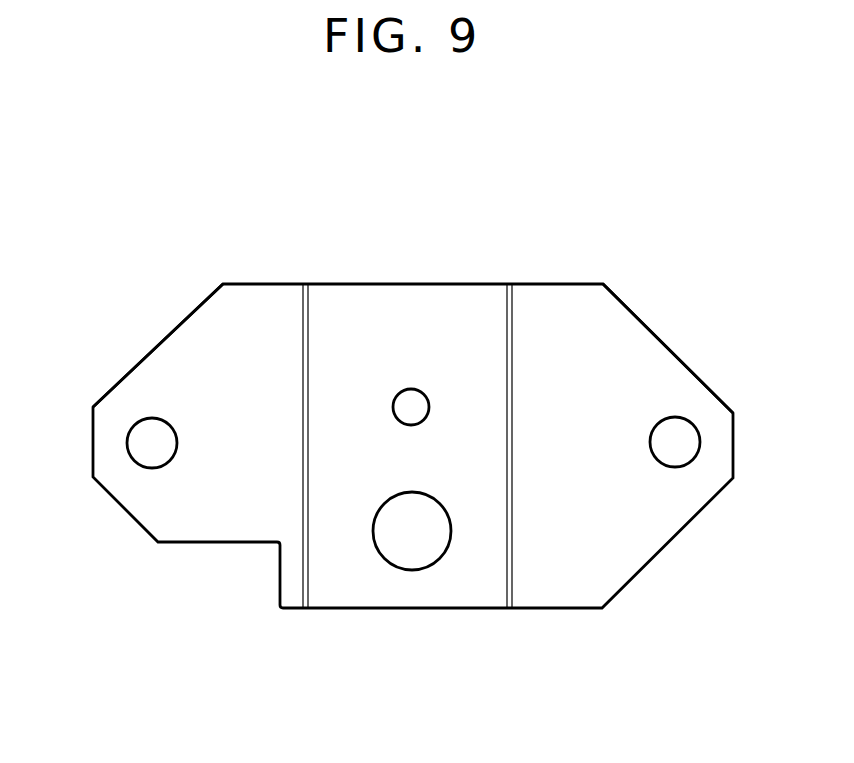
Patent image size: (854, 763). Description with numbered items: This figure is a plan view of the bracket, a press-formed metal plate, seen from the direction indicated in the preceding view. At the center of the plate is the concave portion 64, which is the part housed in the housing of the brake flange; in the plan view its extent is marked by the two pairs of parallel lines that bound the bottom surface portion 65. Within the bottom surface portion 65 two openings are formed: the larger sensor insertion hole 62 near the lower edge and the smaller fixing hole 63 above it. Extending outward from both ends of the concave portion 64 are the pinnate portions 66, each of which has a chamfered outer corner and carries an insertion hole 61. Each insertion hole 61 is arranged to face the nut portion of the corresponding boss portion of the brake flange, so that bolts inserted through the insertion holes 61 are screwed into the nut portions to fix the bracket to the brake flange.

The insertion hole 61 is at (150, 418).
The sensor insertion hole 62 is at (400, 569).
The fixing hole 63 is at (407, 389).
The concave portion 64 is at (482, 305).
The bottom surface portion 65 is at (342, 305).
The pinnate portion 66 is at (192, 353).